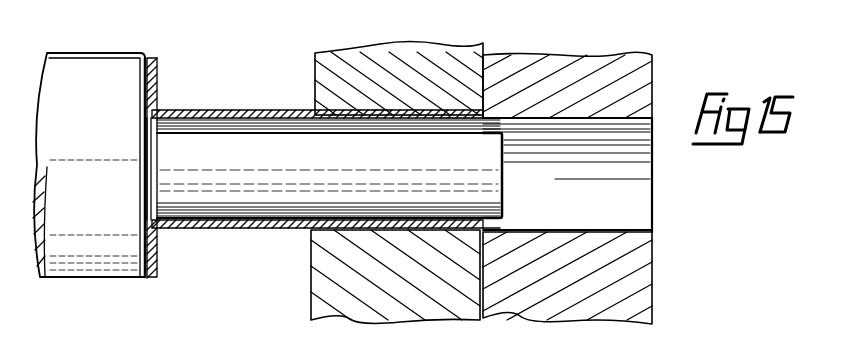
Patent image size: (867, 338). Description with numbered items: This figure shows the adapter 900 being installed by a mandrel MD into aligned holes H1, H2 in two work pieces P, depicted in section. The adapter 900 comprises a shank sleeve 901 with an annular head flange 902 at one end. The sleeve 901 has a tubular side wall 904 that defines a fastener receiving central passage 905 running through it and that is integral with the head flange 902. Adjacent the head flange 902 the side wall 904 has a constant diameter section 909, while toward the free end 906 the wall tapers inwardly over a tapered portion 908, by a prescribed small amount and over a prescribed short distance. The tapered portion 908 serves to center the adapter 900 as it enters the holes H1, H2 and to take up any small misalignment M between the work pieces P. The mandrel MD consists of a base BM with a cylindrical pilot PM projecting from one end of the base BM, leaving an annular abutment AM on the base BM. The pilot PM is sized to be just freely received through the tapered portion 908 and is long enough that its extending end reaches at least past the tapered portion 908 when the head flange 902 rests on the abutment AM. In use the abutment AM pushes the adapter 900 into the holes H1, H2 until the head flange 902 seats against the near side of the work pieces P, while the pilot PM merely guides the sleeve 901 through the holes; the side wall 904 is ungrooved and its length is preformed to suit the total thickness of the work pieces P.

The adapter 900 is at (326, 157).
The shank sleeve 901 is at (391, 106).
The annular head flange 902 is at (158, 76).
The tubular side wall 904 is at (309, 115).
The fastener receiving central passage 905 is at (314, 216).
The free end 906 is at (490, 227).
The tapered portion 908 is at (443, 120).
The constant diameter section 909 is at (227, 120).
The mandrel MD is at (140, 38).
The annular abutment AM is at (147, 88).
The base BM is at (97, 148).
The cylindrical pilot PM is at (365, 185).
The hole H1 is at (441, 117).
The hole H2 is at (550, 118).
The misalignment M is at (484, 119).
The work piece P is at (455, 45).